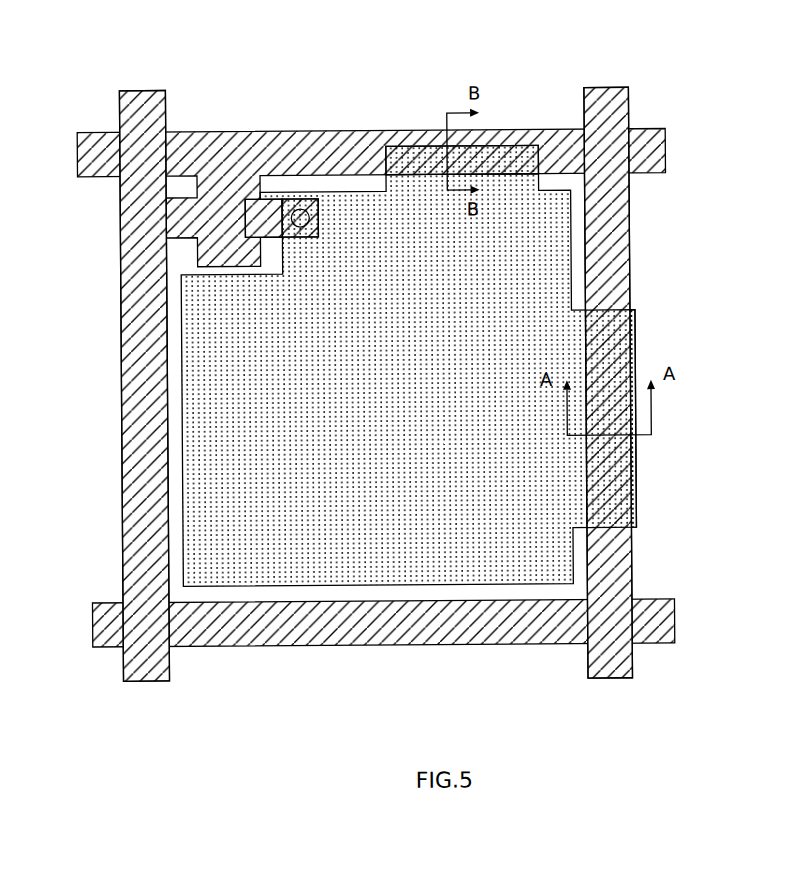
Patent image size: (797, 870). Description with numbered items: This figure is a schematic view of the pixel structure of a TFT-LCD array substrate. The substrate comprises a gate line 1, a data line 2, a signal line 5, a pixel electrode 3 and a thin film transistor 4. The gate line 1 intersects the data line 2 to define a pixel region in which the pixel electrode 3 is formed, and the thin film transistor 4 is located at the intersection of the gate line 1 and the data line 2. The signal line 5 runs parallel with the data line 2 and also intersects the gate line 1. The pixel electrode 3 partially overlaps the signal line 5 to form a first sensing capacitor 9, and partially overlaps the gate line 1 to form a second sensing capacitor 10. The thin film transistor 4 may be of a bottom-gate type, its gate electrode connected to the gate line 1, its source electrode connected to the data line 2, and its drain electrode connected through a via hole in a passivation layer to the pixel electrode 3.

The gate line 1 is at (371, 140).
The data line 2 is at (85, 386).
The pixel electrode 3 is at (226, 564).
The thin film transistor 4 is at (174, 129).
The signal line 5 is at (668, 382).
The first sensing capacitor 9 is at (666, 379).
The second sensing capacitor 10 is at (462, 93).